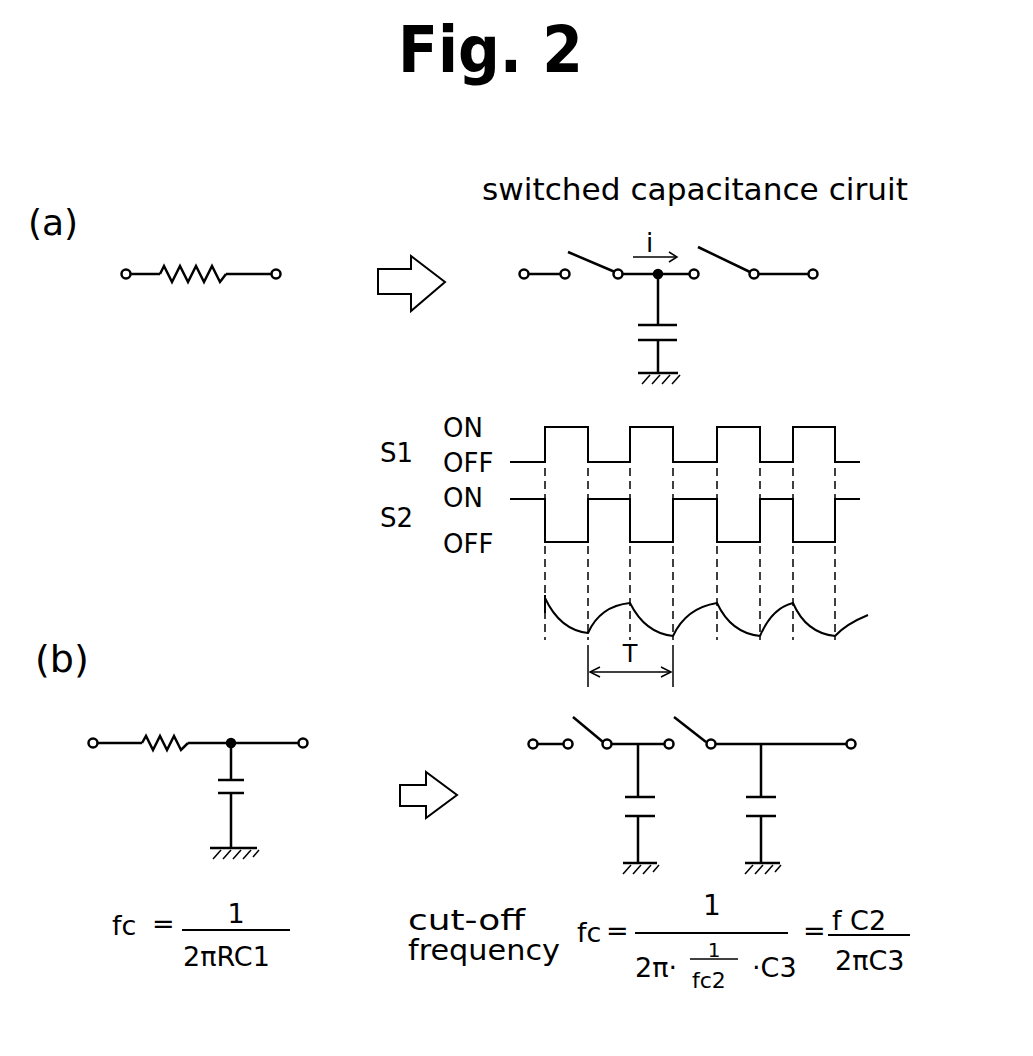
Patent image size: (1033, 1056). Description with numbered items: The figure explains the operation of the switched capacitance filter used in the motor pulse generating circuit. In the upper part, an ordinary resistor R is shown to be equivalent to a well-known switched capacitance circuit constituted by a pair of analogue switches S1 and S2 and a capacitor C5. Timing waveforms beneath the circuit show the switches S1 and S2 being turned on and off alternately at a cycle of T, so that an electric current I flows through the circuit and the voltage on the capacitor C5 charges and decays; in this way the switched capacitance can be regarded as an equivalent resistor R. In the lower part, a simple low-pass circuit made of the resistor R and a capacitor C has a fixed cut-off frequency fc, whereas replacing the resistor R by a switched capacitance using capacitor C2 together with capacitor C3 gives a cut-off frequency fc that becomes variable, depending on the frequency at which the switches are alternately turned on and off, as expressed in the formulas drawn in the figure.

The equivalent resistor R is at (185, 489).
The capacitor C is at (244, 801).
The analogue switch S1 is at (591, 244).
The analogue switch S2 is at (730, 244).
The capacitor C5 is at (681, 329).
The capacitor C2 is at (663, 809).
The capacitor C3 is at (781, 809).